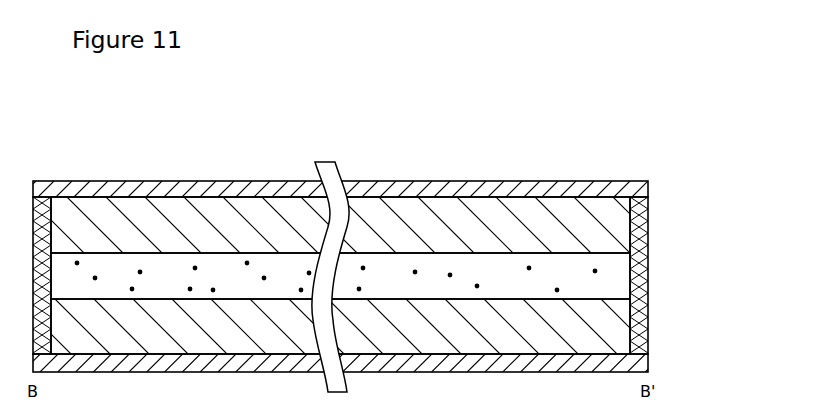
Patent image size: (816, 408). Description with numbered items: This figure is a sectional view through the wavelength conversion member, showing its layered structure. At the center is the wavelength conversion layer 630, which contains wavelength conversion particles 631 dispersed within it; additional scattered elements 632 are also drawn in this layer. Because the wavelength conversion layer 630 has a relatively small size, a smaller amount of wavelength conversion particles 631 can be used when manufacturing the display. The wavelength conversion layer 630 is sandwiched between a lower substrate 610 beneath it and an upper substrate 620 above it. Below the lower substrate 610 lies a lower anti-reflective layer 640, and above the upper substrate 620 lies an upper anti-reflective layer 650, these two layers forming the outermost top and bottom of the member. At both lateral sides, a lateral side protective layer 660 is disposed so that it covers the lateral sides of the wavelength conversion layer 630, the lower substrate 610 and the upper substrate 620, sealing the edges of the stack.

The lower substrate 610 is at (613, 322).
The upper substrate 620 is at (613, 223).
The wavelength conversion layer 630 is at (404, 275).
The wavelength conversion particles 631 is at (615, 283).
The liquid crystal droplets 632 is at (595, 271).
The lower anti-reflective layer 640 is at (638, 364).
The upper anti-reflective layer 650 is at (638, 190).
The lateral side protective layer 660 is at (642, 242).